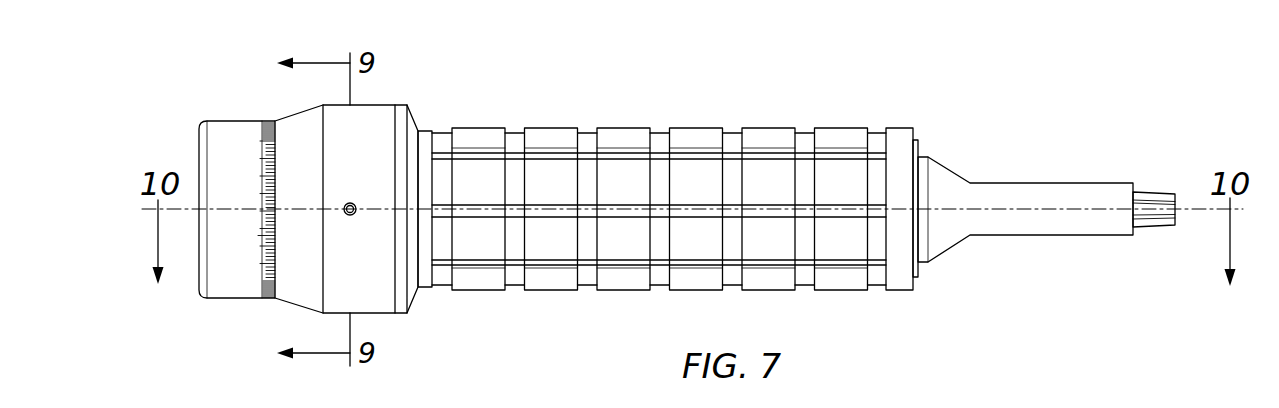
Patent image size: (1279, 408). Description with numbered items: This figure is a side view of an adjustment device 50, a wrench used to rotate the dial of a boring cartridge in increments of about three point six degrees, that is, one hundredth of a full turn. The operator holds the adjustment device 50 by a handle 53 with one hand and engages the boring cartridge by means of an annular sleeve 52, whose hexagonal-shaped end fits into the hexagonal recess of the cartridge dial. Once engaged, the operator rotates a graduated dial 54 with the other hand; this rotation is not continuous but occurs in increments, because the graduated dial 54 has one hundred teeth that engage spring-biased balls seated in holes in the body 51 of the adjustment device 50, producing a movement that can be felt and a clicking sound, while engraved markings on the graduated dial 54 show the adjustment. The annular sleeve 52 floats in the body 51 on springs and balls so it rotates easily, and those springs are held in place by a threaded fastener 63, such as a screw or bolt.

The adjustment device 50 is at (856, 78).
The body 51 is at (417, 108).
The annular sleeve 52 is at (1154, 183).
The handle 53 is at (688, 123).
The graduated dial 54 is at (228, 116).
The threaded fastener 63 is at (350, 219).